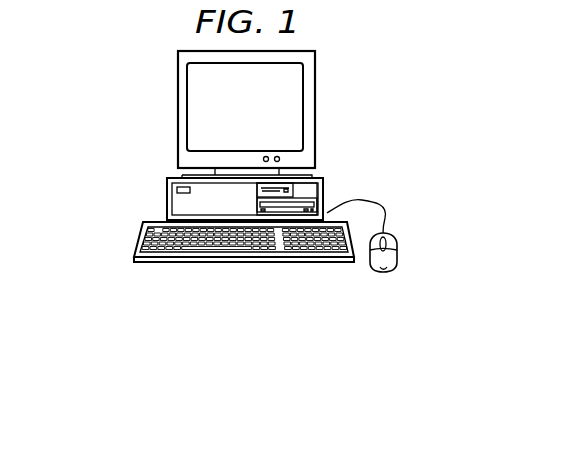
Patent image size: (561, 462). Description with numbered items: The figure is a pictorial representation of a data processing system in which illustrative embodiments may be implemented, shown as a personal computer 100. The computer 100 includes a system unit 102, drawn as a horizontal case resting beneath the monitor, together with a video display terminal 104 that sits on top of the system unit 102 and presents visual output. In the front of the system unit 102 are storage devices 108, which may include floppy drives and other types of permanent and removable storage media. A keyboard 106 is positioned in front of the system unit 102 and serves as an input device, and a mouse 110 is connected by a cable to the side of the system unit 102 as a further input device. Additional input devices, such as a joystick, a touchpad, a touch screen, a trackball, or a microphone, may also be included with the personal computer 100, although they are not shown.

The computer 100 is at (125, 88).
The system unit 102 is at (162, 205).
The video display terminal 104 is at (315, 112).
The keyboard 106 is at (227, 263).
The storage devices 108 is at (300, 190).
The mouse 110 is at (397, 258).